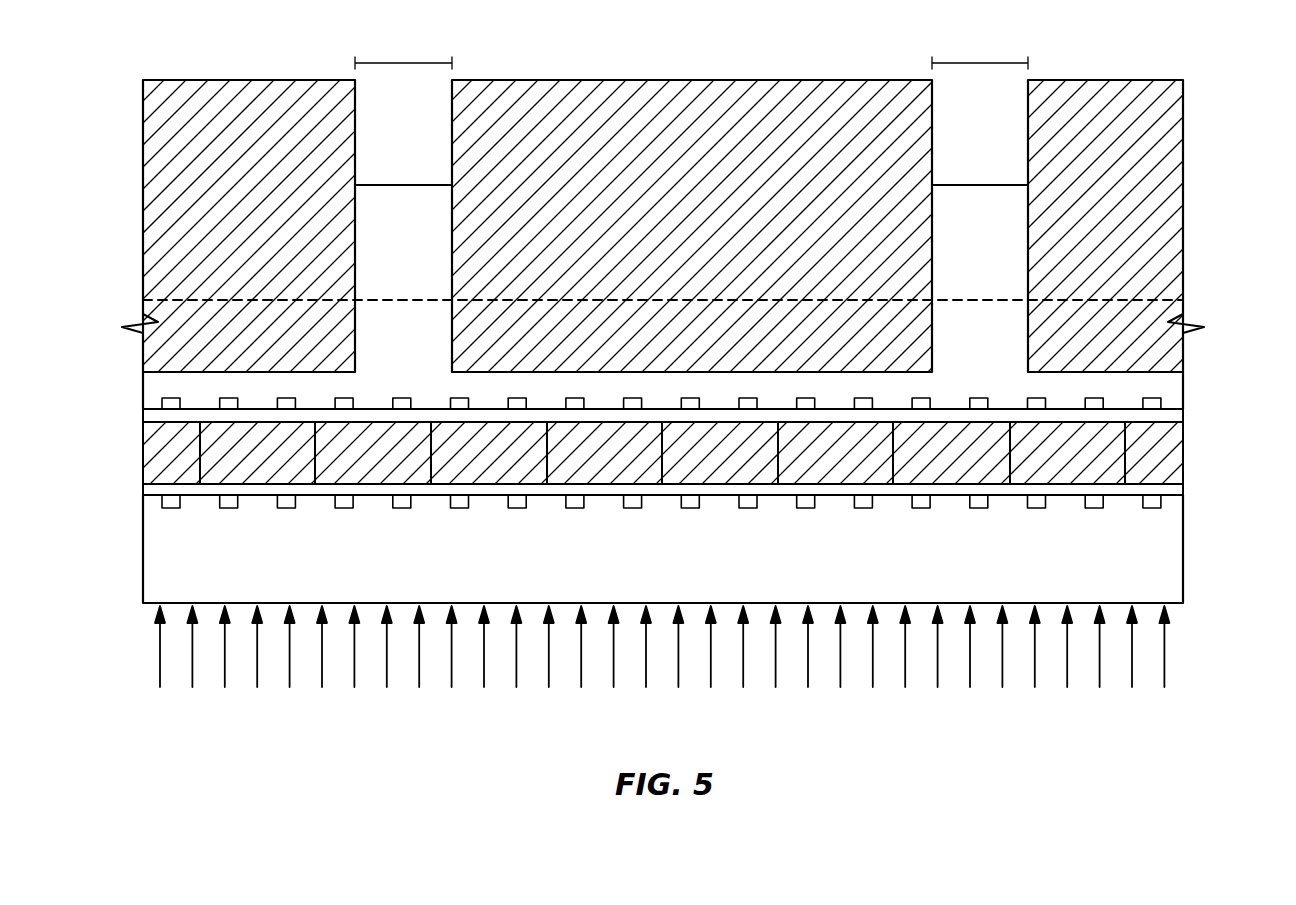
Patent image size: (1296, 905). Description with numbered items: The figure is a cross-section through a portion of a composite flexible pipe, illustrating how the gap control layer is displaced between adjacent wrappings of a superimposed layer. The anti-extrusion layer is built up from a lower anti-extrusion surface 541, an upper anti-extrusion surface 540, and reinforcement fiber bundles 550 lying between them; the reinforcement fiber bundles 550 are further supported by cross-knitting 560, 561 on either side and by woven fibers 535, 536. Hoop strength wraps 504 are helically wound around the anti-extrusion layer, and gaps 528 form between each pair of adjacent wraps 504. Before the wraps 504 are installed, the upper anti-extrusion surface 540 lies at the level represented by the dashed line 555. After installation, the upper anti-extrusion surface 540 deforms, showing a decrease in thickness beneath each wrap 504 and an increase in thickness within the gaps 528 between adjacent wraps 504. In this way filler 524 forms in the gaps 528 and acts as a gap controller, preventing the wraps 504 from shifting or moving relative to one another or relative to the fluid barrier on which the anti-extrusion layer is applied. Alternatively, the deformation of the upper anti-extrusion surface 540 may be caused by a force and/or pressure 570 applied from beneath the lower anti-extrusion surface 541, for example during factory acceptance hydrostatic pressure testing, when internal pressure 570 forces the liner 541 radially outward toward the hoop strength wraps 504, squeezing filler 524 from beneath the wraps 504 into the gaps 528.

The hoop strength wraps 504 is at (238, 80).
The gaps 528 is at (402, 57).
The filler 524 is at (406, 173).
The upper anti-extrusion surface 540 is at (378, 277).
The dashed line 555 is at (1125, 300).
The cross-knitting 560 is at (1095, 398).
The woven fibers 536 is at (1166, 420).
The reinforcement fiber bundles 550 is at (1155, 455).
The woven fibers 535 is at (1166, 492).
The cross-knitting 561 is at (1095, 512).
The lower anti-extrusion surface 541 is at (1165, 562).
The force and/or pressure 570 is at (840, 665).